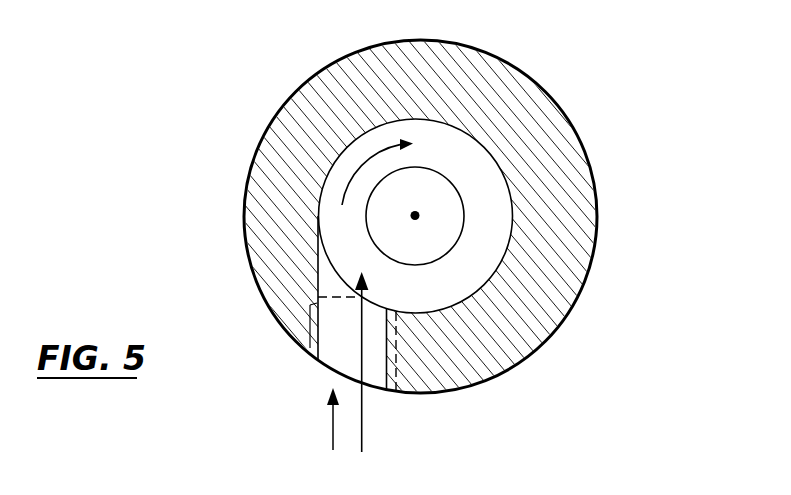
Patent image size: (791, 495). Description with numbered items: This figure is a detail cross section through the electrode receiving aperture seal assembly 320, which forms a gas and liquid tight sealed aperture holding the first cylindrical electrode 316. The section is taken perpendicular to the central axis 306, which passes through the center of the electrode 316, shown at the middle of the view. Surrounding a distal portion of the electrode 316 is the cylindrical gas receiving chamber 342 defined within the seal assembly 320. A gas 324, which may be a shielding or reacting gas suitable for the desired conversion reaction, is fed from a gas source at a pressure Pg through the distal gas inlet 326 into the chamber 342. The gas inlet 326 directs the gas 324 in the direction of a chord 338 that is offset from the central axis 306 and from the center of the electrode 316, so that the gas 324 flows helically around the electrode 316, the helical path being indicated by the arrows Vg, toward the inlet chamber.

The aperture seal assembly 320 is at (541, 89).
The first cylindrical electrode 316 is at (466, 180).
The central axis 306 is at (432, 222).
The distal gas inlet 326 is at (317, 330).
The gas receiving chamber 342 is at (456, 284).
The gas 324 is at (308, 420).
The chord 338 is at (410, 362).